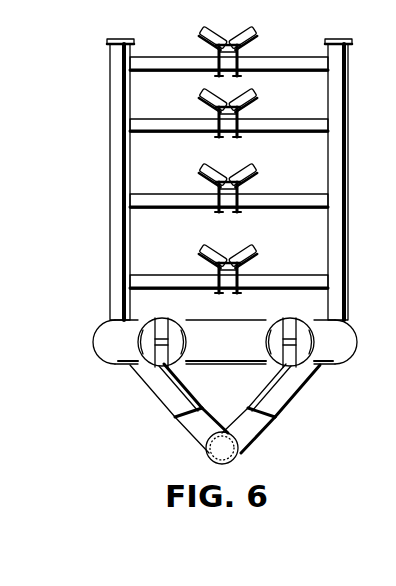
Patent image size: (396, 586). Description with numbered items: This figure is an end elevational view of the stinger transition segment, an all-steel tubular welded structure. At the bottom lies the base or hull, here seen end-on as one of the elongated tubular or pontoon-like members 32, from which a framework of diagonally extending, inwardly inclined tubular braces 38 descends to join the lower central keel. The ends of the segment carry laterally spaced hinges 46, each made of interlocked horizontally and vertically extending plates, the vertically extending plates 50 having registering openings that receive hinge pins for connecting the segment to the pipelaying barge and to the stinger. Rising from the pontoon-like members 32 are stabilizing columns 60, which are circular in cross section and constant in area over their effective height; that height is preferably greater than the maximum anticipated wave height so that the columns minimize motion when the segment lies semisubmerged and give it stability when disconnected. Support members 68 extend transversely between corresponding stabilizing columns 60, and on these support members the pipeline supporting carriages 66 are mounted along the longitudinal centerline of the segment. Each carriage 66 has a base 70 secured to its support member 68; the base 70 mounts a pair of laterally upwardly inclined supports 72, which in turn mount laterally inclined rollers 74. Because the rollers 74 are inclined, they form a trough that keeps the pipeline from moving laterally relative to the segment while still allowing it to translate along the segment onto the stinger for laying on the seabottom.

The tubular or pontoon-like members 32 is at (94, 340).
The tubular braces 38 is at (155, 390).
The hinges 46 is at (175, 323).
The vertically extending plates 50 is at (284, 320).
The stabilizing columns 60 is at (110, 162).
The pipeline supporting carriages 66 is at (197, 174).
The support members 68 is at (285, 71).
The base 70 is at (210, 60).
The laterally upwardly inclined supports 72 is at (253, 45).
The rollers 74 is at (235, 28).